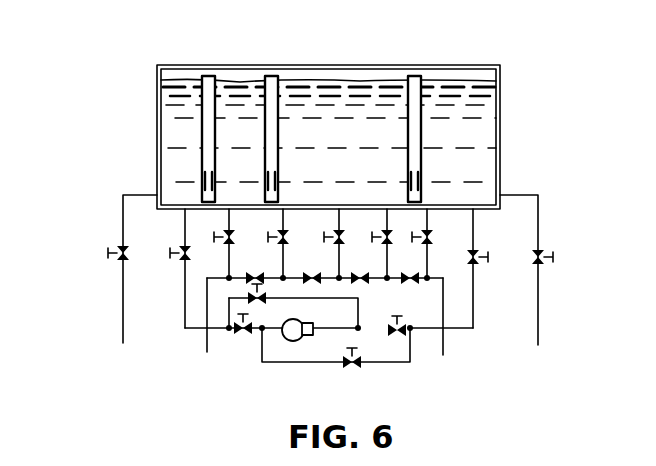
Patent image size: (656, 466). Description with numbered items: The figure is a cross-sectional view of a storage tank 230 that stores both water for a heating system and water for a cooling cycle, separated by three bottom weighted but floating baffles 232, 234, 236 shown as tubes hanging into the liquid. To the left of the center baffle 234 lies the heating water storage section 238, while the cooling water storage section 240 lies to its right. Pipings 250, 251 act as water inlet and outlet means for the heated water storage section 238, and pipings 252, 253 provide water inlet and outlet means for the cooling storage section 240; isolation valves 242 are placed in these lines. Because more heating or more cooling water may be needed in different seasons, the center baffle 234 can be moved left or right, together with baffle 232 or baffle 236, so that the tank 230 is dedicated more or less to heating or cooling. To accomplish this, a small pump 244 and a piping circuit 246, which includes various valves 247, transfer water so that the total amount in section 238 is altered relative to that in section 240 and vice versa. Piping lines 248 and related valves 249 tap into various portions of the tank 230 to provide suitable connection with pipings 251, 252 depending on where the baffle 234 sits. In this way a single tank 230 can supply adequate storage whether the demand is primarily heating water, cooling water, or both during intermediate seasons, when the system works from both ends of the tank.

The tank 230 is at (503, 113).
The baffle 232 is at (209, 78).
The center baffle 234 is at (272, 78).
The baffle 236 is at (415, 78).
The heating water storage section 238 is at (172, 137).
The cooling water storage section 240 is at (488, 147).
The isolation valves 242 is at (171, 252).
The small pump 244 is at (336, 320).
The piping circuit 246 is at (293, 363).
The valves 247 is at (236, 337).
The piping lines 248 is at (284, 222).
The valves 249 is at (312, 277).
The piping 250 is at (123, 296).
The piping 251 is at (207, 346).
The piping 252 is at (443, 352).
The piping 253 is at (538, 315).